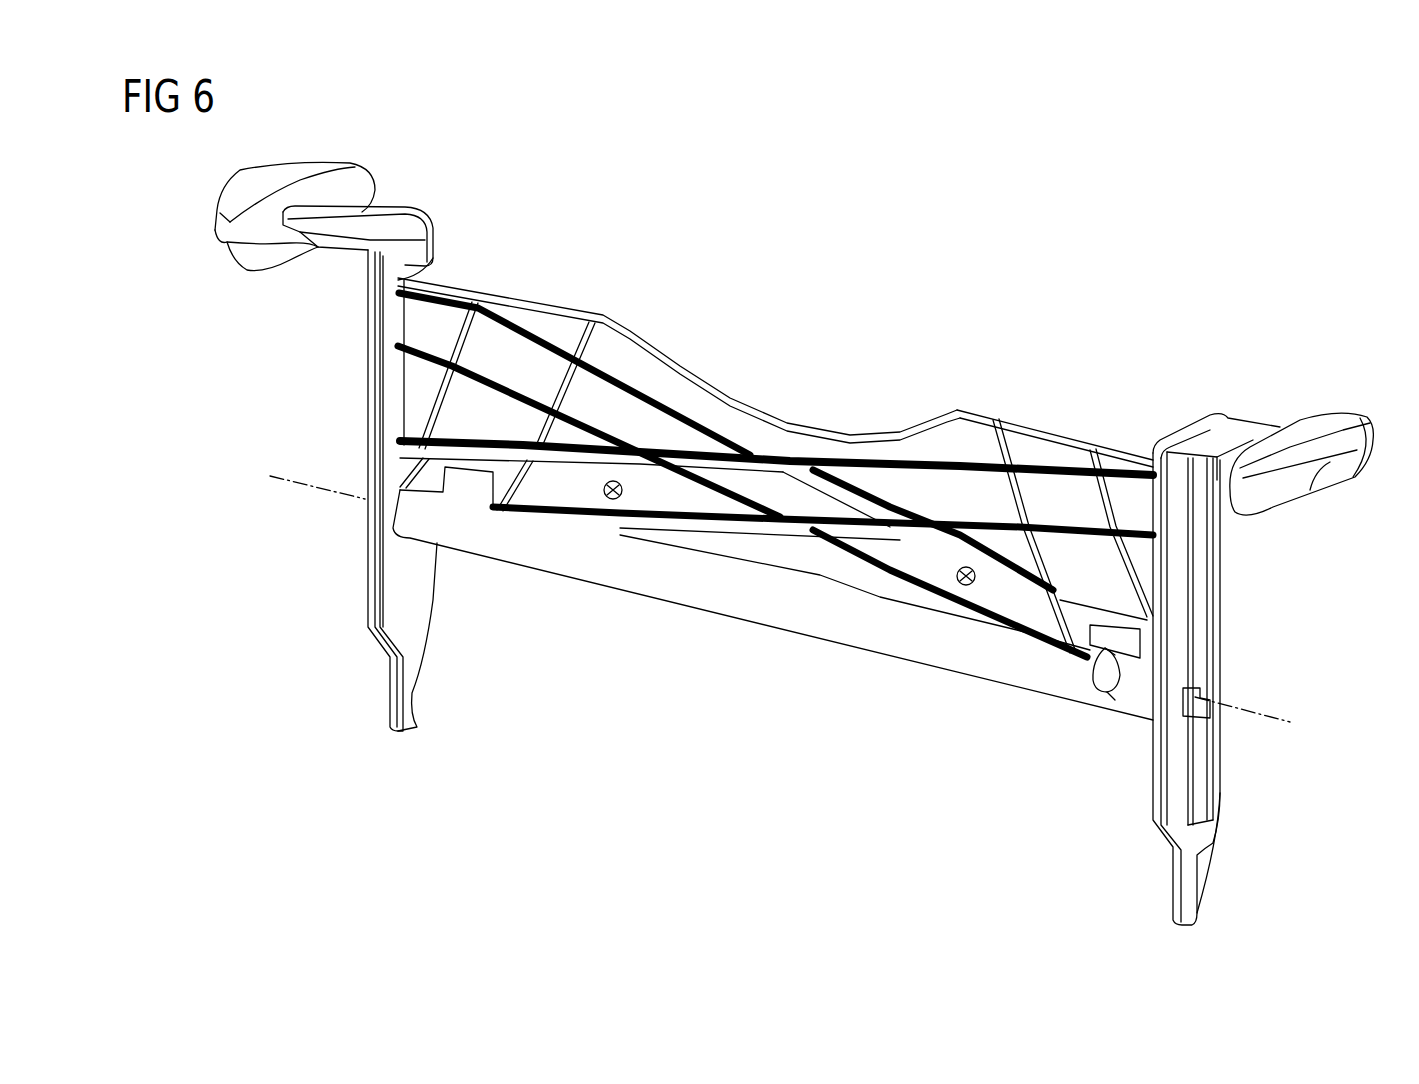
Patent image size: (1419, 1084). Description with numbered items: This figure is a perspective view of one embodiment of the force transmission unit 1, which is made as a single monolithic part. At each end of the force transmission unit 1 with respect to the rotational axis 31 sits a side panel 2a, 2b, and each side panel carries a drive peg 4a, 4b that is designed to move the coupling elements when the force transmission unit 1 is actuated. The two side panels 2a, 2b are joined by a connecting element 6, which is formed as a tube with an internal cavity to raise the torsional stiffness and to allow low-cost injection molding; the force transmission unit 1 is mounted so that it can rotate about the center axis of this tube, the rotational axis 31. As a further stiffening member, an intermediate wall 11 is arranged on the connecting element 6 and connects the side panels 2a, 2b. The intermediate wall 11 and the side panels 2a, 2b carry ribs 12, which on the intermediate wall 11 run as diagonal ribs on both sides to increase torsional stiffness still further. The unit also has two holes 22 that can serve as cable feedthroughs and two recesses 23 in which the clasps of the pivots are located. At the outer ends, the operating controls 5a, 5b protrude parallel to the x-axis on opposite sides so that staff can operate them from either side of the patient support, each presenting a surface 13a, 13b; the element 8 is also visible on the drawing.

The force transmission unit 1 is at (837, 536).
The side panel 2a is at (395, 603).
The side panel 2b is at (1175, 790).
The drive peg 4a is at (410, 690).
The drive peg 4b is at (1195, 890).
The operating control 5a is at (233, 197).
The operating control 5b is at (1287, 425).
The connecting element 6 is at (748, 598).
The peg 8 is at (1090, 668).
The intermediate wall 11 is at (620, 350).
The ribs 12 is at (890, 462).
The first contact surface 13a is at (262, 248).
The second contact surface 13b is at (1340, 430).
The holes 22 is at (610, 500).
The recesses 23 is at (470, 485).
The rotational axis 31 is at (272, 478).